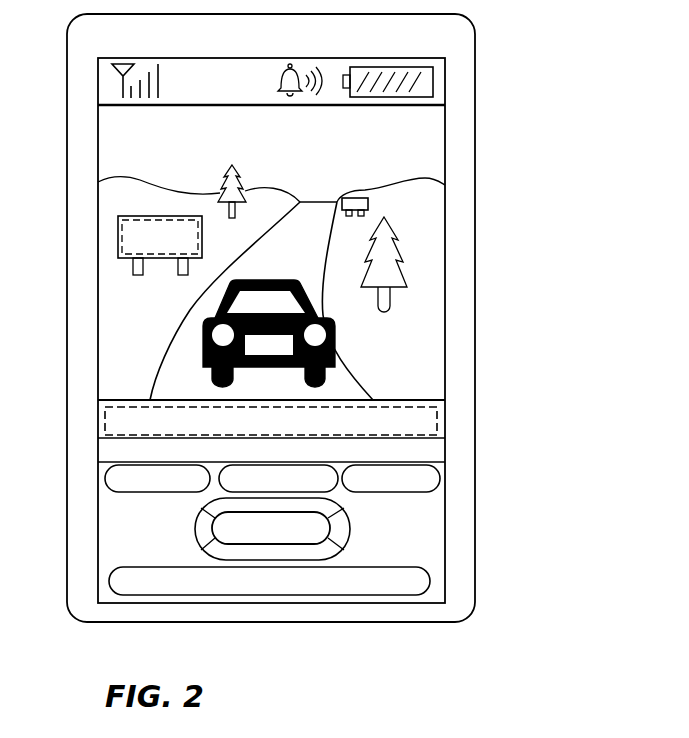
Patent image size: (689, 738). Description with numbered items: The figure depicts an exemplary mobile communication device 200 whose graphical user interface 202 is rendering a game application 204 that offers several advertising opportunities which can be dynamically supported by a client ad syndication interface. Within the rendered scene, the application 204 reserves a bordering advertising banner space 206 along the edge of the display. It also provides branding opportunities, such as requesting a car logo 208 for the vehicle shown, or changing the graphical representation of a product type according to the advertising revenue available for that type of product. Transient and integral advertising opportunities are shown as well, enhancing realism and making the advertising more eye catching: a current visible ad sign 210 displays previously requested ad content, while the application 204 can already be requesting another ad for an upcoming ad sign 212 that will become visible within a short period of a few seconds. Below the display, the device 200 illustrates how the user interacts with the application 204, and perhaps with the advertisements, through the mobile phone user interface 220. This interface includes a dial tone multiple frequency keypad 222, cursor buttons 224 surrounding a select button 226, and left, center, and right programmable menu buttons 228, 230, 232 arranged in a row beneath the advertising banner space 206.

The mobile communication device 200 is at (288, 318).
The graphical user interface 202 is at (445, 131).
The game application 204 is at (424, 233).
The bordering advertising banner space 206 is at (437, 421).
The car logo 208 is at (335, 325).
The current visible ad sign 210 is at (118, 240).
The upcoming ad sign 212 is at (368, 207).
The mobile phone user interface 220 is at (319, 530).
The dial tone multiple frequency (DTMF) keypad 222 is at (269, 581).
The cursor buttons 224 is at (200, 543).
The select button 226 is at (271, 528).
The left programmable menu button 228 is at (157, 478).
The center programmable menu button 230 is at (278, 478).
The right programmable menu button 232 is at (391, 478).